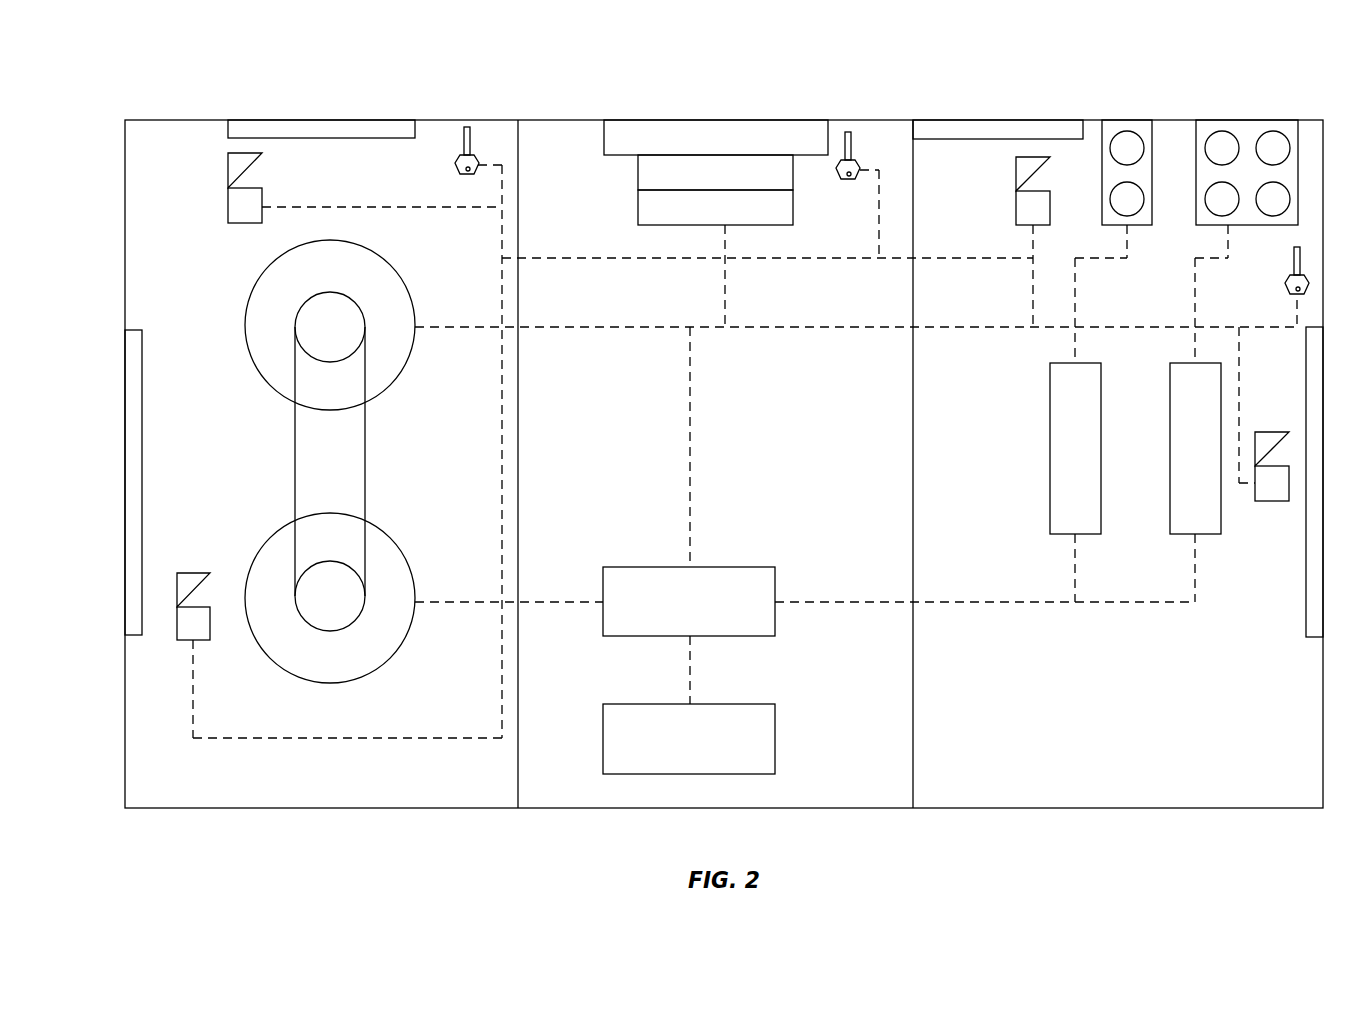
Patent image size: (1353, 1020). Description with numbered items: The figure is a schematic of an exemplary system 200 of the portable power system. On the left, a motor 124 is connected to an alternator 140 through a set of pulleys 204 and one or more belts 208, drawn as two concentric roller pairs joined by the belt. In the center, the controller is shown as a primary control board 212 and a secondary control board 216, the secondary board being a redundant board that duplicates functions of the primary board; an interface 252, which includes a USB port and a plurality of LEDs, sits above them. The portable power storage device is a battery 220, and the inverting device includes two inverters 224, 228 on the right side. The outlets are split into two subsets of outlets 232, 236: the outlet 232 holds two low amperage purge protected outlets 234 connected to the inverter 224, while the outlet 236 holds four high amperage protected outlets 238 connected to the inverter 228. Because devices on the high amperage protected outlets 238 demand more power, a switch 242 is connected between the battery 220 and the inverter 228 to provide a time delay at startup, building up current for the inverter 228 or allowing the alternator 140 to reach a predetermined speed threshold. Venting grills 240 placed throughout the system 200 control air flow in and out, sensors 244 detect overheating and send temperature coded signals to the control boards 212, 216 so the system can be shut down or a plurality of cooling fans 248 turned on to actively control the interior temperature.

The system 200 is at (657, 85).
The motor 124 is at (404, 284).
The alternator 140 is at (399, 553).
The pulleys 204 is at (304, 301).
The belts 208 is at (295, 449).
The primary control board 212 is at (638, 170).
The secondary control board 216 is at (638, 210).
The battery 220 is at (775, 758).
The inverter 224 is at (1050, 485).
The inverter 228 is at (1170, 488).
The outlet 232 is at (1105, 120).
The low amperage purge protected outlets 234 is at (1133, 141).
The outlet 236 is at (1222, 120).
The high amperage protected outlets 238 is at (1273, 141).
The venting grills 240 is at (305, 120).
The switch 242 is at (743, 567).
The sensors 244 is at (470, 127).
The cooling fans 248 is at (228, 207).
The interface 252 is at (715, 120).